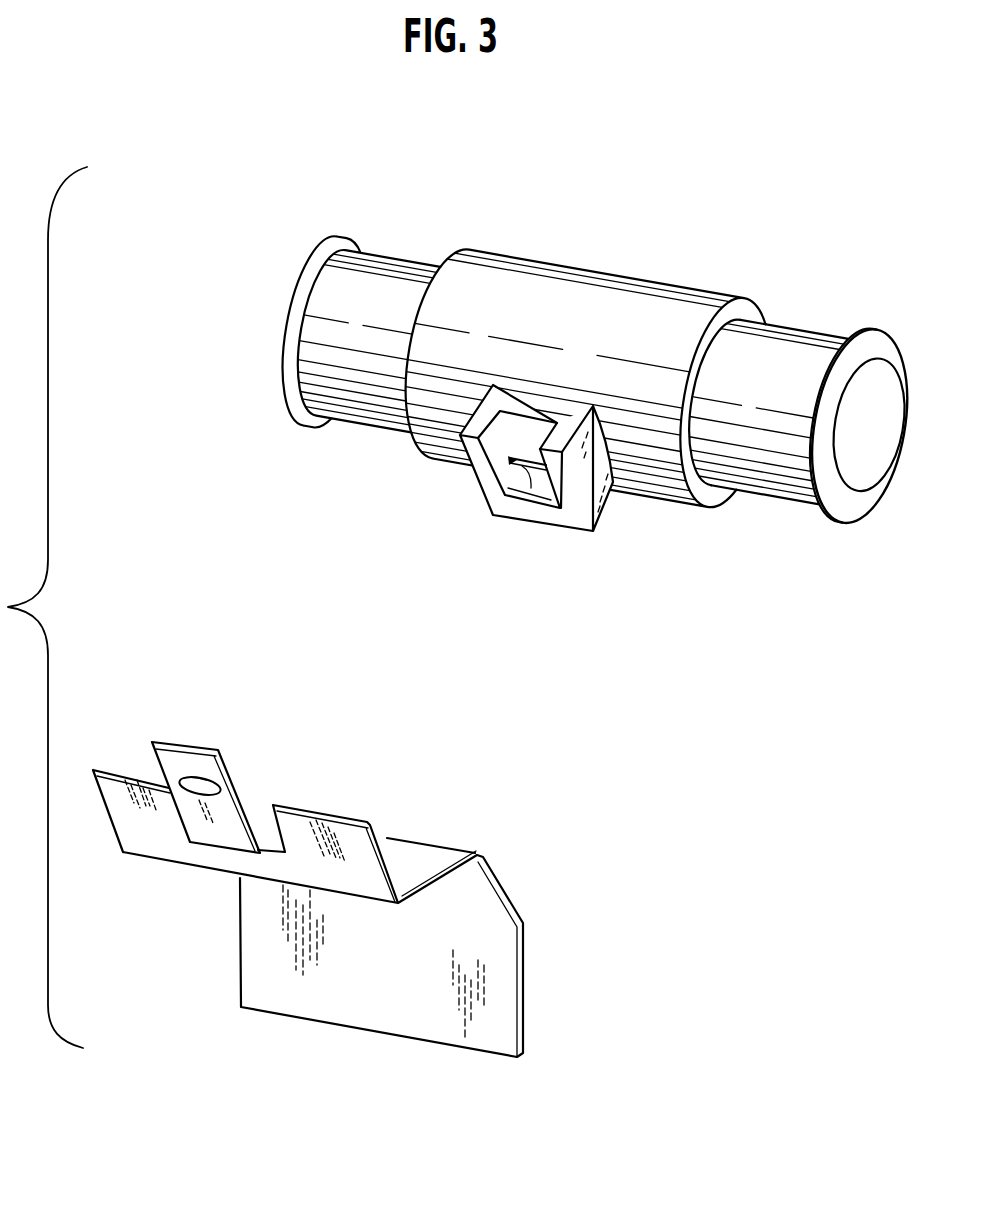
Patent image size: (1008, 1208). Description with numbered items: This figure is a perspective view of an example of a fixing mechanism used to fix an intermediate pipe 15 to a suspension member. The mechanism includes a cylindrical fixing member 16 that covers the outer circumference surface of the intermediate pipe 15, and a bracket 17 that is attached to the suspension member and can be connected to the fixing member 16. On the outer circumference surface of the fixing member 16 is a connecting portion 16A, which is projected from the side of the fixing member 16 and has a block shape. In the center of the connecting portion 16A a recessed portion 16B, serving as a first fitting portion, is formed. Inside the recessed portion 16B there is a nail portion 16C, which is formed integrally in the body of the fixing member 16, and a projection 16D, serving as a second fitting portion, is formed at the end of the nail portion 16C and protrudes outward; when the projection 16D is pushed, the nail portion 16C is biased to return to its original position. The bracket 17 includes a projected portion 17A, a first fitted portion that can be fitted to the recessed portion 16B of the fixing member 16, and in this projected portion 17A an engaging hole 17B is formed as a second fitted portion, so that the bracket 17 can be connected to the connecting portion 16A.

The intermediate pipe 15 is at (394, 278).
The fixing member 16 is at (662, 300).
The connecting portion 16A is at (546, 517).
The recessed portion 16B is at (522, 425).
The nail portion 16C is at (508, 488).
The projection 16D is at (510, 460).
The bracket 17 is at (308, 866).
The projected portion 17A is at (214, 764).
The engaging hole 17B is at (196, 780).